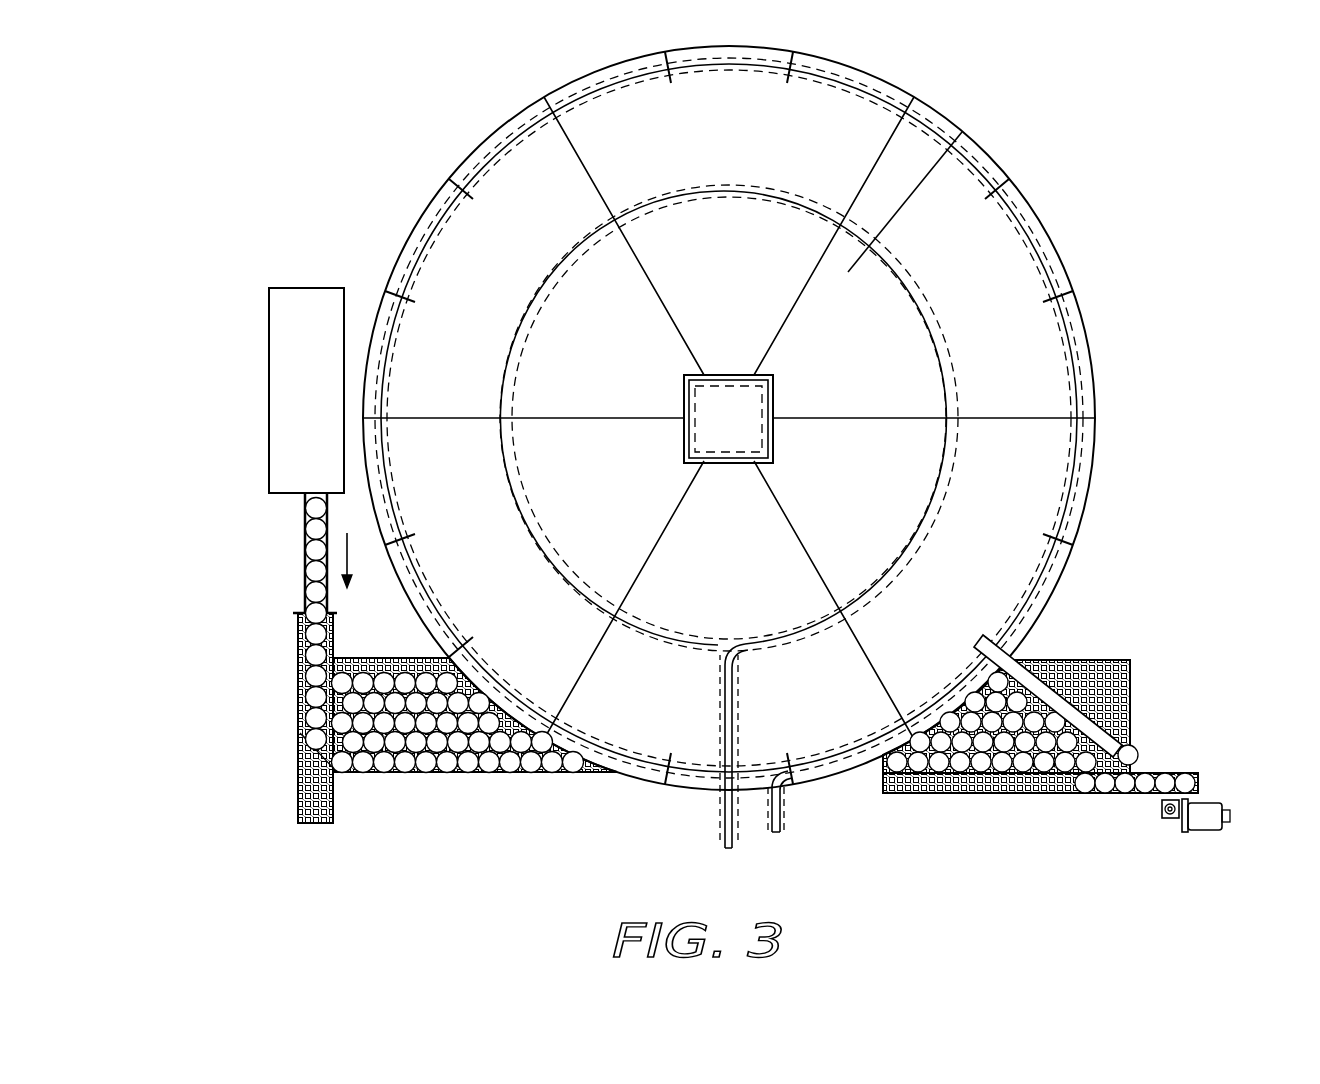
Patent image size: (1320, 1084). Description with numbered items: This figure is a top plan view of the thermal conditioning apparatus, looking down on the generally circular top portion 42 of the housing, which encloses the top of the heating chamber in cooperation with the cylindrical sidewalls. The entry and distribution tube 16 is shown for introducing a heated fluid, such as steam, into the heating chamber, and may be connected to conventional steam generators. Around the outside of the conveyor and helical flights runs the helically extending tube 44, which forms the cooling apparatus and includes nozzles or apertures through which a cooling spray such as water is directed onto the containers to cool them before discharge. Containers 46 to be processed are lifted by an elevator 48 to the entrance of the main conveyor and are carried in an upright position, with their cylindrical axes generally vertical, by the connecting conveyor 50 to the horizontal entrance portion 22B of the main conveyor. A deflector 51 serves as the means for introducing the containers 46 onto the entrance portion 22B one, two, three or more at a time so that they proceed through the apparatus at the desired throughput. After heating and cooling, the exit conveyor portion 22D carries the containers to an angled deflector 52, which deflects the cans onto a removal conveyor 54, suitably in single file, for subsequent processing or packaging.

The entry and distribution tube 16 is at (725, 828).
The second portion of the conveyor 22B is at (505, 772).
The horizontal portion of the conveyor 22D is at (1093, 660).
The circular top portion 42 is at (962, 132).
The helically extending tube 44 is at (1047, 287).
The containers 46 is at (437, 745).
The elevator 48 is at (269, 390).
The connecting conveyor 50 is at (305, 545).
The deflector 51 is at (302, 742).
The angled deflector 52 is at (1093, 712).
The removal conveyor 54 is at (1055, 793).